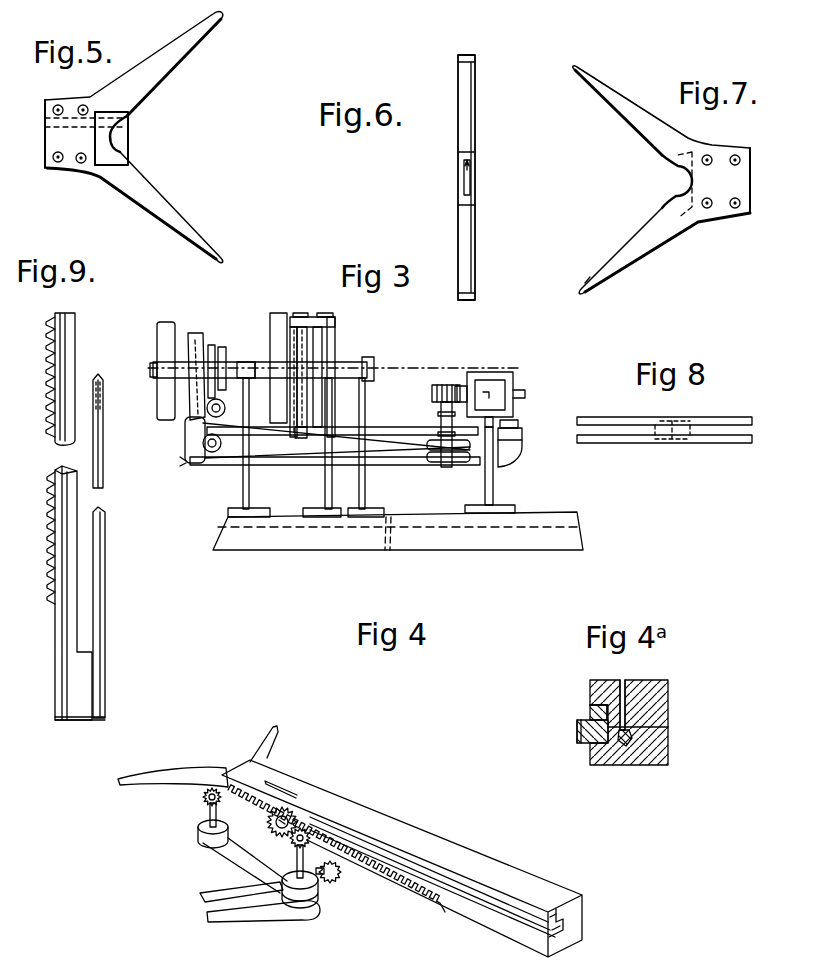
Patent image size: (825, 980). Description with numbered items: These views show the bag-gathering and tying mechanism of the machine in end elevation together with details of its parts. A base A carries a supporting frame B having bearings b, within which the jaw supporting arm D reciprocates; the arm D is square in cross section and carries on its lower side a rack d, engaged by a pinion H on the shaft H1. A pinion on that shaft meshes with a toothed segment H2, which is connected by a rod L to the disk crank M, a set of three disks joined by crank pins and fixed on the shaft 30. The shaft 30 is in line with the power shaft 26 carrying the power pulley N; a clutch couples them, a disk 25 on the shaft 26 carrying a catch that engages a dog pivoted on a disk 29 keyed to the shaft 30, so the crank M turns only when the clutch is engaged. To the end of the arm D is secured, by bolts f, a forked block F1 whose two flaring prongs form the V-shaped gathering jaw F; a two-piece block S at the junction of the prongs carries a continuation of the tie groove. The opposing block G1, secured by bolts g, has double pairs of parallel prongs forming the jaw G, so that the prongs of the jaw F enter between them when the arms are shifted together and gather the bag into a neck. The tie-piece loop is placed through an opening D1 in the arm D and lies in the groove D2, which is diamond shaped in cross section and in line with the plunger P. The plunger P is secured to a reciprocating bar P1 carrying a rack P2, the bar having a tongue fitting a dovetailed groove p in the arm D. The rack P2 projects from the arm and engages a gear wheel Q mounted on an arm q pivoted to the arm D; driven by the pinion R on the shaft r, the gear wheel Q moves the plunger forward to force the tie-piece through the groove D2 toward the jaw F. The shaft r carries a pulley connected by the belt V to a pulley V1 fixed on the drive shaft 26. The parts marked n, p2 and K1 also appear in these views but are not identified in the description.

In FIG. 5, the V-shaped gathering jaw F is at (172, 40).
In FIG. 6, the V-shaped gathering jaw F is at (471, 108).
In FIG. 4, the V-shaped gathering jaw F is at (147, 780).
In FIG. 5, the forked block F1 is at (52, 143).
In FIG. 5, the bolts f is at (84, 105).
In FIG. 5, the block S is at (130, 117).
In FIG. 5, the groove D2 is at (45, 120).
In FIG. 6, the groove D2 is at (475, 166).
In FIG. 3, the groove D2 is at (493, 396).
In FIG. 4A, the groove D2 is at (632, 740).
In FIG. 4, the groove D2 is at (560, 928).
In FIG. 7, the V-shaped gathering jaw G is at (613, 92).
In FIG. 7, the block G1 is at (758, 166).
In FIG. 7, the bolts g is at (737, 152).
In FIG. 7, the rod L is at (670, 193).
In FIG. 9, the plunger P is at (104, 466).
In FIG. 4A, the plunger P is at (668, 727).
In FIG. 9, the reciprocating bar P1 is at (97, 382).
In FIG. 4A, the reciprocating bar P1 is at (582, 745).
In FIG. 9, the rack P2 is at (54, 490).
In FIG. 4A, the rack P2 is at (580, 735).
In FIG. 4, the rack P2 is at (229, 784).
In FIG. 3, the base A is at (490, 551).
In FIG. 3, the supporting frame B is at (500, 483).
In FIG. 3, the power pulley N is at (165, 320).
In FIG. 3, the power shaft 26 is at (153, 365).
In FIG. 3, the pulley V1 is at (202, 382).
In FIG. 4, the pulley V1 is at (245, 865).
In FIG. 3, the disk 25 is at (211, 345).
In FIG. 3, the disk 29 is at (225, 353).
In FIG. 3, the shaft 30 is at (265, 368).
In FIG. 3, the disk crank M is at (281, 312).
In FIG. 3, the toothed segment H2 is at (304, 316).
In FIG. 3, the nut n is at (301, 439).
In FIG. 3, the shaft H1 is at (410, 437).
In FIG. 3, the belt V is at (432, 462).
In FIG. 4, the belt V is at (239, 912).
In FIG. 3, the gear wheel Q is at (432, 388).
In FIG. 4, the gear wheel Q is at (291, 816).
In FIG. 4, the arm q is at (296, 842).
In FIG. 3, the block p2 is at (461, 385).
In FIG. 4A, the dovetailed groove p is at (600, 712).
In FIG. 4, the dovetailed groove p is at (557, 920).
In FIG. 3, the bearings b is at (495, 372).
In FIG. 3, the jaw supporting arm D is at (500, 380).
In FIG. 4A, the jaw supporting arm D is at (668, 698).
In FIG. 4, the jaw supporting arm D is at (503, 862).
In FIG. 4A, the opening D1 is at (622, 681).
In FIG. 4, the opening D1 is at (275, 790).
In FIG. 3, the rack d is at (520, 424).
In FIG. 3, the pinion H is at (524, 445).
In FIG. 4, the pinion H is at (333, 881).
In FIG. 8, the link K1 is at (666, 441).
In FIG. 4, the pinion R is at (204, 800).
In FIG. 4, the shaft r is at (198, 838).